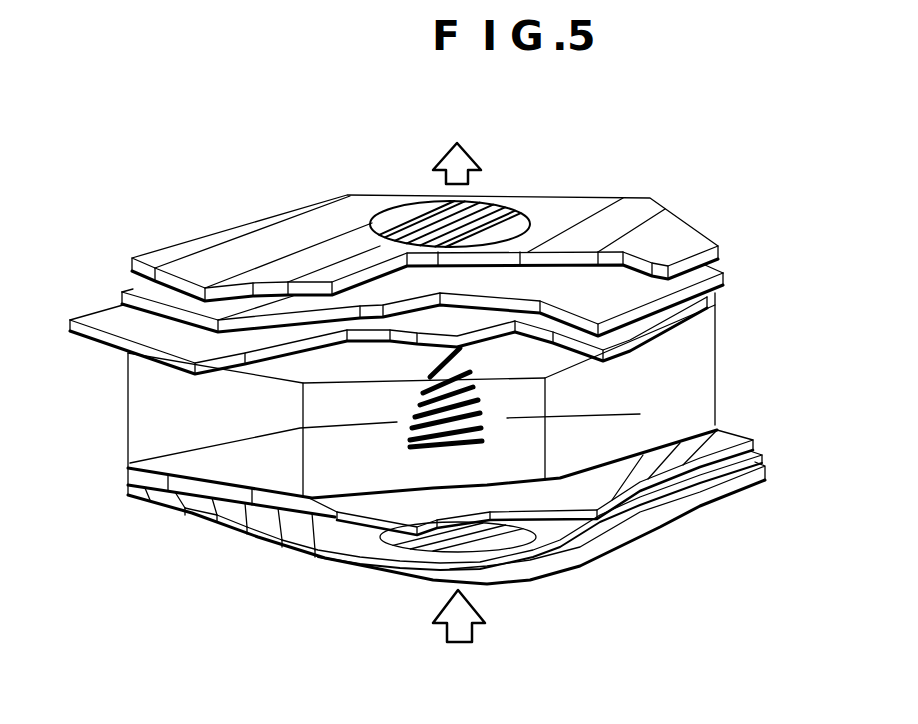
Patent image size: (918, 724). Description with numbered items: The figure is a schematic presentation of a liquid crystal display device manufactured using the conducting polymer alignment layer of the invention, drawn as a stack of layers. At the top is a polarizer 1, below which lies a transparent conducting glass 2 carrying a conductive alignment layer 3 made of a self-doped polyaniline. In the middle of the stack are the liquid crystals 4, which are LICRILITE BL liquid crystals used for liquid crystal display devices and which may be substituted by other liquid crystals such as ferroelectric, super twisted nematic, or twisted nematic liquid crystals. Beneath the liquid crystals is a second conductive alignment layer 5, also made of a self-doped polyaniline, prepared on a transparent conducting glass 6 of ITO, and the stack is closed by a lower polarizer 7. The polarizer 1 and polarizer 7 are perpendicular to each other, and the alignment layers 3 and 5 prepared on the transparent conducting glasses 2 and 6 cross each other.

The polarizer 1 is at (600, 212).
The transparent conducting glass 2 is at (636, 290).
The conductive alignment layer 3 is at (100, 322).
The liquid crystals 4 is at (690, 363).
The conductive alignment layer 5 is at (727, 442).
The transparent conducting glass 6 is at (677, 490).
The polarizer 7 is at (310, 546).